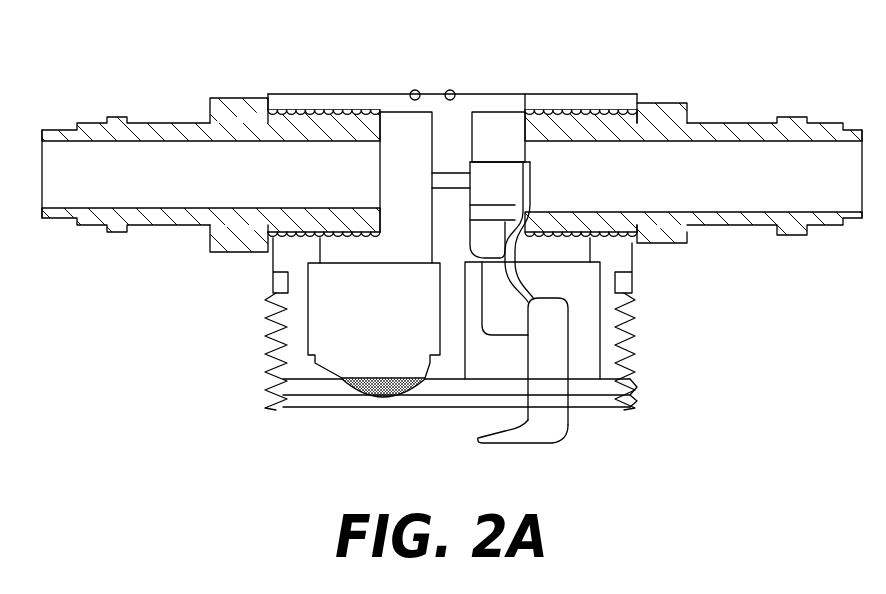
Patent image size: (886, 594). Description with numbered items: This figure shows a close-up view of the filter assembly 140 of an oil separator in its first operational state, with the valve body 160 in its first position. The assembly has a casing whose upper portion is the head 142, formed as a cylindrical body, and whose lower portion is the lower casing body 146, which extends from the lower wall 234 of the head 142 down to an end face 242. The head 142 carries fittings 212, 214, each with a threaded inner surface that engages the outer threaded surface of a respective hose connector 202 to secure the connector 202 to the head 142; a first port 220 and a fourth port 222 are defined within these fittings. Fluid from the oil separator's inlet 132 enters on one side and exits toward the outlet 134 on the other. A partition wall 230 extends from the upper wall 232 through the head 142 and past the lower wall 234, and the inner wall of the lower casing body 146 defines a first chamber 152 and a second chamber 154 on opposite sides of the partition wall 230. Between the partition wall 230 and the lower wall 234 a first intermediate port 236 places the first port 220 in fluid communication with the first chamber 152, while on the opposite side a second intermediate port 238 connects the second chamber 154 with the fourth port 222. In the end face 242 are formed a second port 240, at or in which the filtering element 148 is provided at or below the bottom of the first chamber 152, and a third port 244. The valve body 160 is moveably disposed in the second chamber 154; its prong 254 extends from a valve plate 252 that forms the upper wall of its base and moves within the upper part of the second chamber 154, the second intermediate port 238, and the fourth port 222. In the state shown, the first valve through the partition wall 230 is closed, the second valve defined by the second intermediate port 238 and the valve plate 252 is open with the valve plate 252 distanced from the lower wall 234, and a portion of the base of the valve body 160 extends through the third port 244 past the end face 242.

The filter assembly 140 is at (95, 76).
The inlet 132 is at (255, 97).
The outlet 134 is at (645, 98).
The second fitting 212 is at (307, 100).
The second fitting 214 is at (583, 102).
The head 142 is at (347, 95).
The partition wall 230 is at (449, 140).
The first port 220 is at (318, 163).
The fourth port 222 is at (611, 163).
The hose connector 202 is at (82, 219).
The upper wall 232 is at (395, 187).
The first intermediate port 236 is at (382, 245).
The second intermediate port 238 is at (528, 242).
The prong 254 is at (492, 196).
The valve plate 252 is at (530, 303).
The first chamber 152 is at (397, 326).
The second chamber 154 is at (519, 368).
The filtering element 148 is at (377, 397).
The lower casing body 146 is at (297, 347).
The second port 240 is at (343, 378).
The end face 242 is at (295, 408).
The third port 244 is at (630, 385).
The lower wall 234 is at (273, 257).
The valve body 160 is at (570, 418).